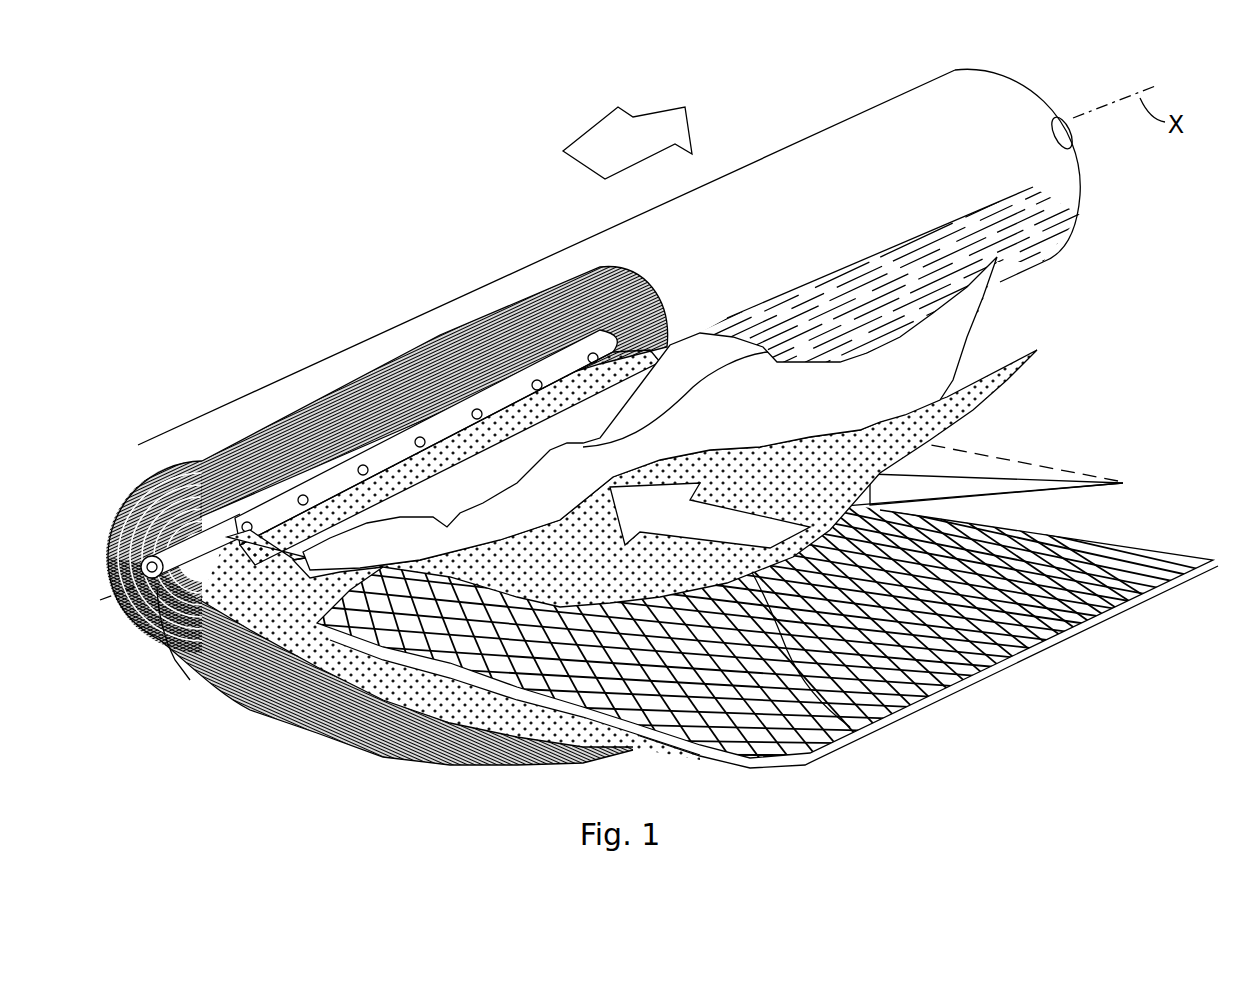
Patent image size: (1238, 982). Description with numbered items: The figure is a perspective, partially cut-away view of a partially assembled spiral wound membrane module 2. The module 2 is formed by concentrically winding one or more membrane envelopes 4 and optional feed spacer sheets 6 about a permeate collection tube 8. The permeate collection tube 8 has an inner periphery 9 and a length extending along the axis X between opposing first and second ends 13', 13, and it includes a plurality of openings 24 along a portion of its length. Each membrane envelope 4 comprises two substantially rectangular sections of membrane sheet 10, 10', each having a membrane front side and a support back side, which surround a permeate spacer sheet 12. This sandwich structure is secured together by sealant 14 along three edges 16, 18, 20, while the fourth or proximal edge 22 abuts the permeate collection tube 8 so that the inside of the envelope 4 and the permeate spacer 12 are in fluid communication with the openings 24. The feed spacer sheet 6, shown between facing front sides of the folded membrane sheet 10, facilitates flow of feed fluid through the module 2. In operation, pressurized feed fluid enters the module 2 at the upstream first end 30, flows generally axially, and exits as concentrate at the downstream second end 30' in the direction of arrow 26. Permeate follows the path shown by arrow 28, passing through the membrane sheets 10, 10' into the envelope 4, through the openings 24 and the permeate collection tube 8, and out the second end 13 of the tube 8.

The spiral wound membrane module 2 is at (490, 262).
The membrane envelope 4 is at (1103, 323).
The feed spacer sheet 6 is at (947, 680).
The permeate collection tube 8 is at (145, 462).
The inner periphery 9 is at (177, 654).
The membrane sheet 10 is at (996, 447).
The membrane sheet 10' is at (712, 413).
The permeate spacer sheet 12 is at (423, 690).
The second end 13 is at (632, 342).
The first end 13' is at (123, 630).
The sealant 14 is at (490, 735).
The edge 16 is at (400, 562).
The edge 18 is at (1090, 477).
The edge 20 is at (1080, 483).
The proximal edge 22 is at (327, 510).
The openings 24 is at (365, 478).
The arrow 26 is at (593, 133).
The arrow 28 is at (843, 727).
The first end 30 is at (166, 481).
The second end 30' is at (1083, 113).